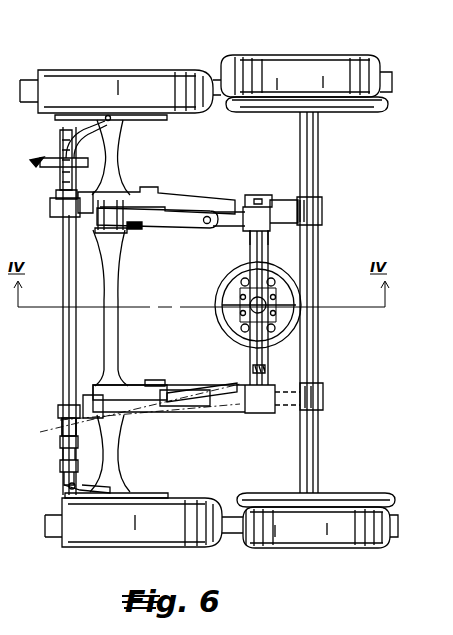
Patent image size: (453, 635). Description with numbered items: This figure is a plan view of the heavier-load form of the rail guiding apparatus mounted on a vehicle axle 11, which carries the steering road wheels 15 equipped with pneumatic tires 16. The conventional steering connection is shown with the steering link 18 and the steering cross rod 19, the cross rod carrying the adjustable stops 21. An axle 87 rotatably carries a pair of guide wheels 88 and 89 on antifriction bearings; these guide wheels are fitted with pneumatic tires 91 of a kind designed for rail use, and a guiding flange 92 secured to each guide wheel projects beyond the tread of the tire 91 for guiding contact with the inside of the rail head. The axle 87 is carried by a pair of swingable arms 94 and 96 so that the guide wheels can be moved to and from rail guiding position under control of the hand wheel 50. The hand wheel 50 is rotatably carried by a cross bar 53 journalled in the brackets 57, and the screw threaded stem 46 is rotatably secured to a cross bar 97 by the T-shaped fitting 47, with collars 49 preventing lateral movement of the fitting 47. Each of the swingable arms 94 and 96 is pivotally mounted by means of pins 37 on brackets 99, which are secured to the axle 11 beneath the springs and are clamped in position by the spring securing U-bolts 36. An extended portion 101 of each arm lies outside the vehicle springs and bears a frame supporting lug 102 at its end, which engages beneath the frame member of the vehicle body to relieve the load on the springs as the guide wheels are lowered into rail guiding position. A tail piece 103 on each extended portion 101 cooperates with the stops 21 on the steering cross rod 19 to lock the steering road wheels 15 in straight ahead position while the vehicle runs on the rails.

The axle 11 is at (113, 319).
The road wheels 15 is at (198, 98).
The pneumatic tires 16 is at (121, 306).
The steering link 18 is at (42, 161).
The steering cross rod 19 is at (70, 307).
The adjustable stops 21 is at (56, 197).
The spring securing U-bolts 36 is at (125, 229).
The pins 37 is at (162, 381).
The screw threaded stem 46 is at (268, 305).
The T-shaped fitting 47 is at (276, 304).
The collars 49 is at (267, 272).
The hand wheel 50 is at (222, 291).
The cross bar 53 is at (250, 247).
The brackets 57 is at (223, 224).
The axle 87 is at (312, 360).
The guide wheel 88 is at (300, 492).
The guide wheel 89 is at (338, 110).
The pneumatic tires 91 is at (305, 302).
The guiding flange 92 is at (247, 107).
The swingable arm 94 is at (240, 409).
The swingable arm 96 is at (200, 205).
The cross bar 97 is at (262, 370).
The brackets 99 is at (120, 385).
The extended portion 101 is at (130, 200).
The frame supporting lug 102 is at (90, 206).
The tail piece 103 is at (86, 420).